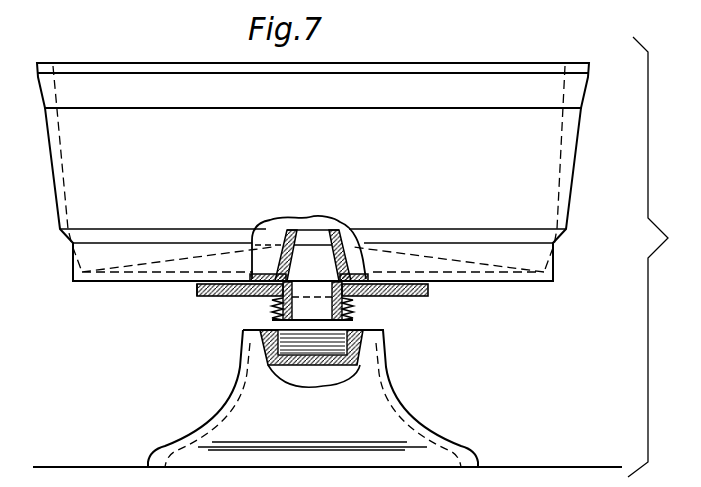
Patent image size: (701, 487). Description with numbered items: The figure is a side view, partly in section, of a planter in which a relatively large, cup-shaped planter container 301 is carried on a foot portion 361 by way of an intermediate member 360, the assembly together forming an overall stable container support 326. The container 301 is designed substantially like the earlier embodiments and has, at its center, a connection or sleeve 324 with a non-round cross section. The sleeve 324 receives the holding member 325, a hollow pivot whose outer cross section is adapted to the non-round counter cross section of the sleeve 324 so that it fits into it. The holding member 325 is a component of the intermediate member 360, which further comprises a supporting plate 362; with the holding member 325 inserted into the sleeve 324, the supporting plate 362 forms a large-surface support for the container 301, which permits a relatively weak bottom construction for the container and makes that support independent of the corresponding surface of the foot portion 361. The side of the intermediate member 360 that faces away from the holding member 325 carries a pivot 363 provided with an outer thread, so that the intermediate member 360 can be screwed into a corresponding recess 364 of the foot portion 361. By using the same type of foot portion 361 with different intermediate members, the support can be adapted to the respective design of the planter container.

The planter container 301 is at (575, 160).
The sleeve 324 is at (348, 233).
The holding member 325 is at (293, 231).
The container support 326 is at (398, 340).
The intermediate member 360 is at (430, 301).
The foot portion 361 is at (238, 376).
The supporting plate 362 is at (198, 297).
The pivot 363 is at (354, 306).
The recess 364 is at (328, 350).